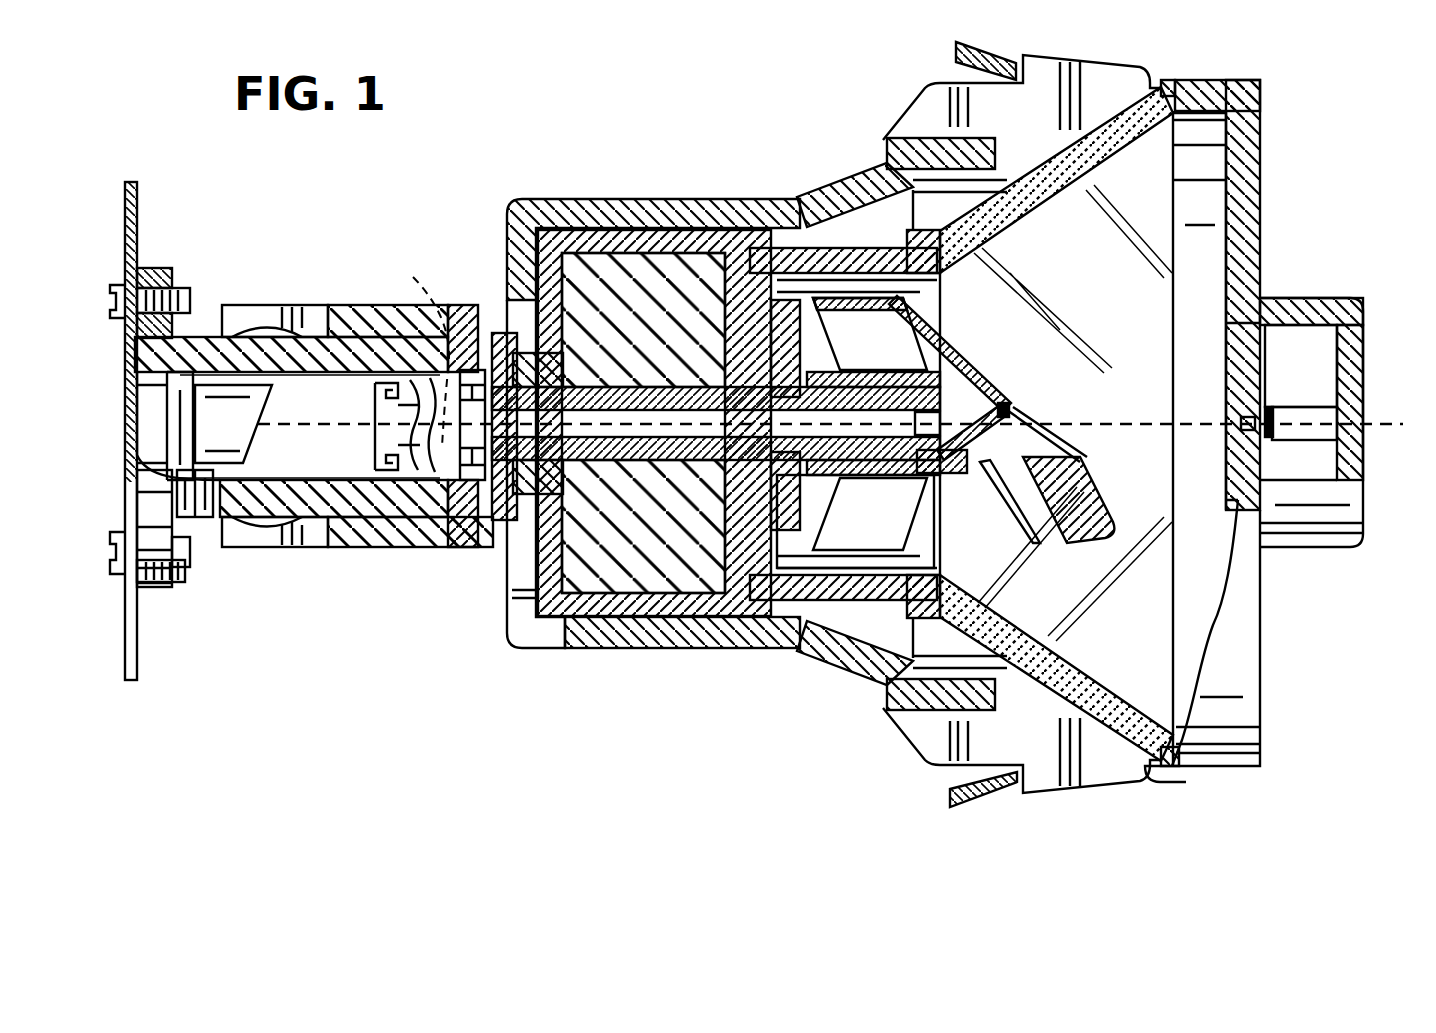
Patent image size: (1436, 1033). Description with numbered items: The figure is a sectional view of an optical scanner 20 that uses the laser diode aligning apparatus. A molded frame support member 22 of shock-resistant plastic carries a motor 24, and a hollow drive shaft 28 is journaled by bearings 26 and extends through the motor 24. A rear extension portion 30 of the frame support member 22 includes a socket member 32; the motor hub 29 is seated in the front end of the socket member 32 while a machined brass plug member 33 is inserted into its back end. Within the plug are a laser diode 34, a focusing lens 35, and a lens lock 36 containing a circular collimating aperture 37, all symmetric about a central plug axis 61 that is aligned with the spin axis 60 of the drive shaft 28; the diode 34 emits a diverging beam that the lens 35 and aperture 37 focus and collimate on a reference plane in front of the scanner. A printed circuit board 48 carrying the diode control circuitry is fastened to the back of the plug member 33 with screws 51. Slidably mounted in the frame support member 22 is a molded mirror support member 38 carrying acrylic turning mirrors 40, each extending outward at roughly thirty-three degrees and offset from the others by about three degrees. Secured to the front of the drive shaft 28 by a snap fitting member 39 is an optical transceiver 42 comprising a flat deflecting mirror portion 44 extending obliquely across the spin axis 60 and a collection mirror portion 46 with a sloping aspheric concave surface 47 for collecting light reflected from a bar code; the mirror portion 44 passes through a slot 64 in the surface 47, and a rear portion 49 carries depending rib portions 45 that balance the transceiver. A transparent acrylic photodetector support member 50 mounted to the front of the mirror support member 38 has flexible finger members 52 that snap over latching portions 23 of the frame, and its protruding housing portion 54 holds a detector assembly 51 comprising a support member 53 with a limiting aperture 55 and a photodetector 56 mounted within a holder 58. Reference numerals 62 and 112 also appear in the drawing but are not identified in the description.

The optical scanner 20 is at (655, 68).
The frame support member 22 is at (568, 197).
The latching portions 23 is at (1046, 82).
The motor 24 is at (672, 268).
The bearings 26 is at (505, 328).
The hollow drive shaft 28 is at (896, 392).
The motor hub 29 is at (458, 540).
The rear extension portion 30 is at (300, 296).
The socket member 32 is at (372, 298).
The plug member 33 is at (178, 492).
The laser diode 34 is at (212, 415).
The focusing lens 35 is at (398, 416).
The lens lock 36 is at (385, 490).
The circular collimating aperture 37 is at (411, 357).
The mirror support member 38 is at (858, 232).
The snap fitting member 39 is at (824, 480).
The turning or pattern mirrors 40 is at (1045, 160).
The optical transceiver 42 is at (1018, 532).
The flat deflecting mirror portion 44 is at (1008, 404).
The depending rib portions 45 is at (888, 324).
The collection mirror portion 46 is at (950, 368).
The aspheric concave surface 47 is at (1100, 505).
The printed circuit board 48 is at (127, 186).
The rear portion 49 is at (790, 246).
The photodetector support member 50 is at (1250, 80).
The screws / detector assembly 51 is at (120, 290).
The flexible finger members 52 is at (960, 44).
The support member 53 is at (1226, 322).
The protruding housing portion 54 is at (1308, 300).
The limiting aperture 55 is at (1241, 418).
The photodetector 56 is at (1270, 410).
The holder 58 is at (1305, 435).
The spin axis 60 is at (1385, 424).
The central plug axis 61 is at (310, 430).
The shaft end 62 is at (872, 438).
The slot 64 is at (1018, 455).
The cam surface 112 is at (288, 308).